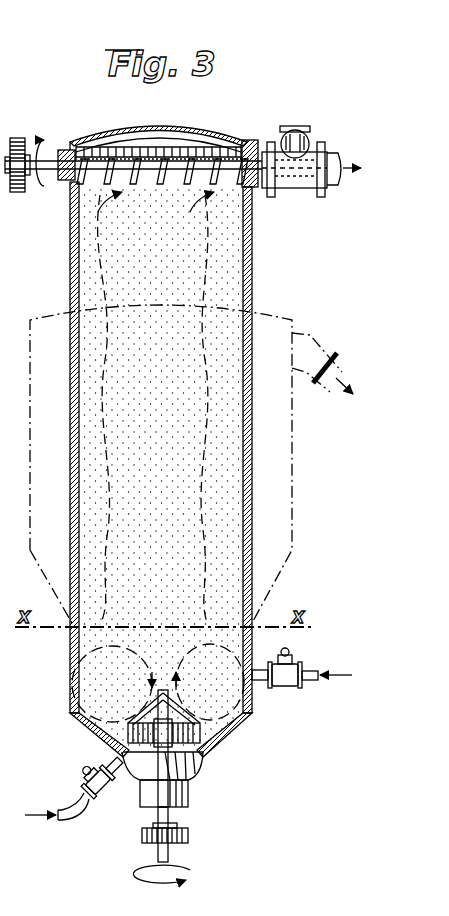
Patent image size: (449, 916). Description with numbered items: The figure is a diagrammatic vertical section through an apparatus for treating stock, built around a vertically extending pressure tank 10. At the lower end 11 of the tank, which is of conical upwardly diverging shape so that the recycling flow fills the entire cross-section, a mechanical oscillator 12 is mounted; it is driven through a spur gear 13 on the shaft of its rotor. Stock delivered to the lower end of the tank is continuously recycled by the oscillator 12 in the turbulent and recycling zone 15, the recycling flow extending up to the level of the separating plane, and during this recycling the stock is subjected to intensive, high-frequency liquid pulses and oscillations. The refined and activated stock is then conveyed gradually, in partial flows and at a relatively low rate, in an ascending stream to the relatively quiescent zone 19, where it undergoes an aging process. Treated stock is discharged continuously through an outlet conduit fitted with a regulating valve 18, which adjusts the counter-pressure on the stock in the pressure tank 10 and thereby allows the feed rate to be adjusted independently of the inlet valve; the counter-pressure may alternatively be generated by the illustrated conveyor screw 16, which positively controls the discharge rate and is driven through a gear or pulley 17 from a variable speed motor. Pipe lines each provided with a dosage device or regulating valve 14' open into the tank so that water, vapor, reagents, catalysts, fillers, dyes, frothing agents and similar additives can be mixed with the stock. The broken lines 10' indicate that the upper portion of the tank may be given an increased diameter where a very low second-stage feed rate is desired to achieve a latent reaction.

The pressure tank 10 is at (141, 441).
The broken lines indicating enlarged upper tank portion 10' is at (191, 464).
The lower end of the pressure tank 11 is at (212, 750).
The mechanical oscillator 12 is at (186, 723).
The spur gear 13 is at (188, 832).
The regulating valve 14' is at (188, 743).
The turbulent and recycling zone 15 is at (115, 680).
The conveyor screw 16 is at (162, 180).
The gear or pulley 17 is at (16, 194).
The regulating valve 18 is at (301, 172).
The quiescent zone 19 is at (190, 277).